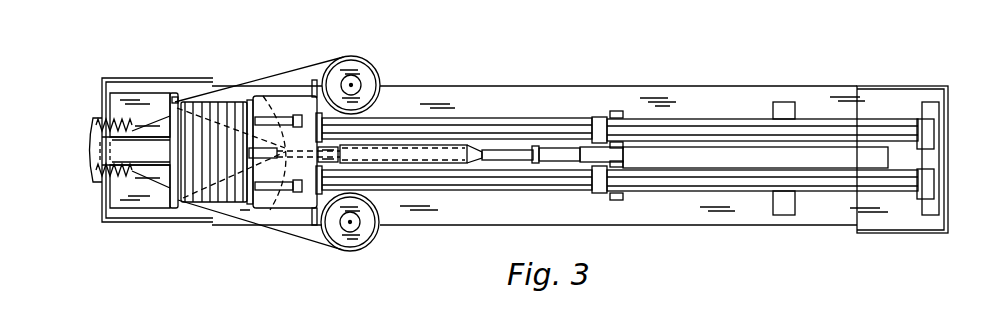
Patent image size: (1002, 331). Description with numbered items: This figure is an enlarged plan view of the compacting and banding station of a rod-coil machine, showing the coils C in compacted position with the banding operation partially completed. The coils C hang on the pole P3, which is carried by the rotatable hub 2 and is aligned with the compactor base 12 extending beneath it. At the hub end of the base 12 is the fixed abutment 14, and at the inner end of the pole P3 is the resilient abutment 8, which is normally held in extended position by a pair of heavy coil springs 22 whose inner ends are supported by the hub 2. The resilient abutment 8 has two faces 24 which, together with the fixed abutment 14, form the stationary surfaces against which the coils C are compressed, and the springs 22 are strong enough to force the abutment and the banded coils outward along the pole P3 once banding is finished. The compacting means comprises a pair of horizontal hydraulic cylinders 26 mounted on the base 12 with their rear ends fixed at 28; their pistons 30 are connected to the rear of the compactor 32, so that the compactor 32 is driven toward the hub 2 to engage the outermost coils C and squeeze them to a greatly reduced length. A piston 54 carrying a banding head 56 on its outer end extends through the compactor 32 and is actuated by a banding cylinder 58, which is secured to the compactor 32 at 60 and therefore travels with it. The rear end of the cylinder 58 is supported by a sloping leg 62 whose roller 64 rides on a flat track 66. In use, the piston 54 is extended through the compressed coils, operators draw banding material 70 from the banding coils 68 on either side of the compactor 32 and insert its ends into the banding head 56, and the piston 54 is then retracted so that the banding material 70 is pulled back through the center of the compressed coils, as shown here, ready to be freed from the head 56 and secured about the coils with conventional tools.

The rotatable hub 2 is at (88, 132).
The resilient abutment 8 is at (176, 100).
The compactor base 12 is at (600, 86).
The fixed abutment 14 is at (147, 205).
The heavy coil springs 22 is at (108, 120).
The faces of the resilient abutment 24 is at (179, 200).
The horizontal hydraulic cylinders 26 is at (713, 125).
The fixed rear ends of cylinders 28 is at (928, 130).
The pistons 30 is at (483, 127).
The compactor 32 is at (298, 102).
The piston 54 is at (275, 193).
The banding head 56 is at (264, 95).
The banding cylinder 58 is at (520, 160).
The securing point of banding cylinder 60 is at (343, 147).
The sloping leg 62 is at (557, 147).
The roller 64 is at (628, 161).
The flat track 66 is at (697, 158).
The banding coils 68 is at (357, 68).
The banding material 70 is at (310, 66).
The coils C is at (223, 198).
The pole P3 is at (442, 145).